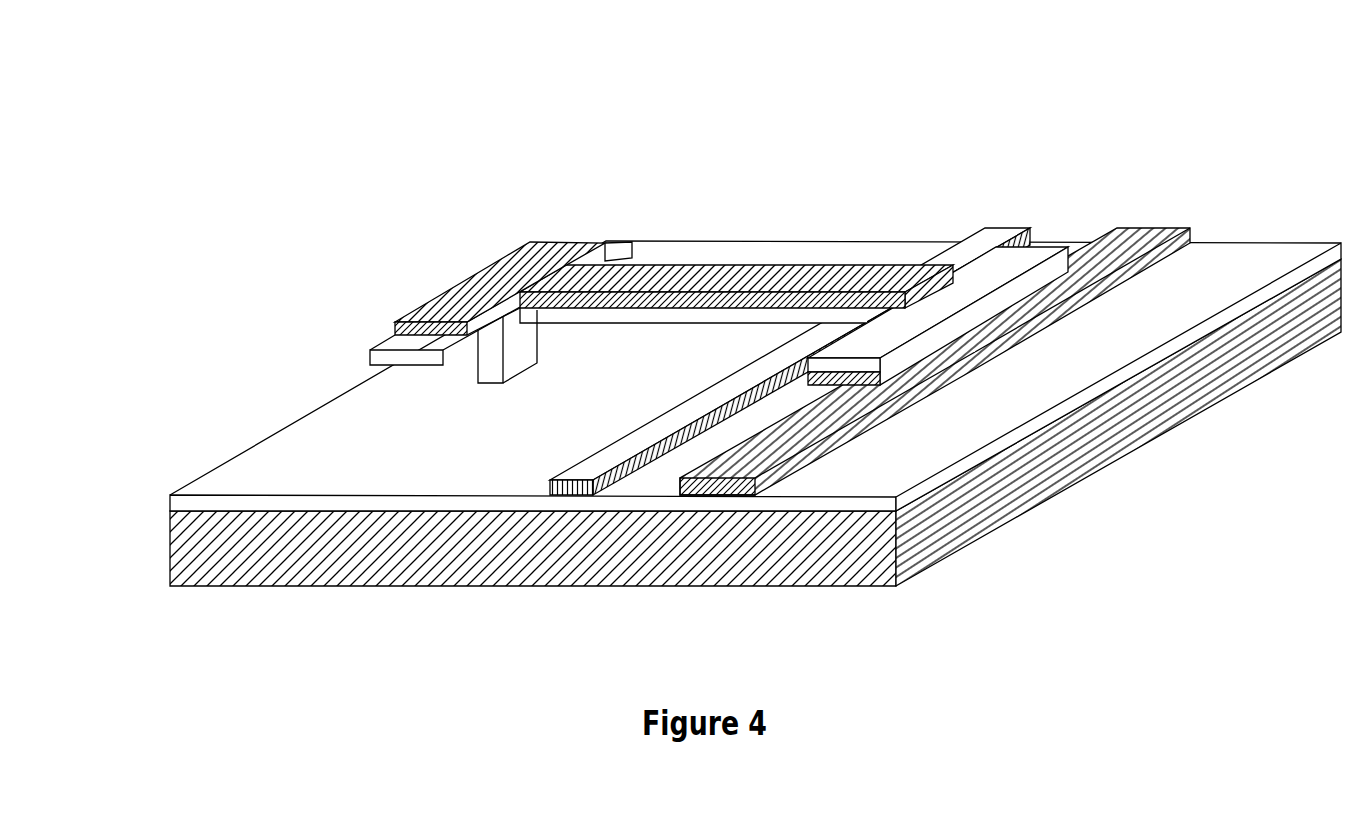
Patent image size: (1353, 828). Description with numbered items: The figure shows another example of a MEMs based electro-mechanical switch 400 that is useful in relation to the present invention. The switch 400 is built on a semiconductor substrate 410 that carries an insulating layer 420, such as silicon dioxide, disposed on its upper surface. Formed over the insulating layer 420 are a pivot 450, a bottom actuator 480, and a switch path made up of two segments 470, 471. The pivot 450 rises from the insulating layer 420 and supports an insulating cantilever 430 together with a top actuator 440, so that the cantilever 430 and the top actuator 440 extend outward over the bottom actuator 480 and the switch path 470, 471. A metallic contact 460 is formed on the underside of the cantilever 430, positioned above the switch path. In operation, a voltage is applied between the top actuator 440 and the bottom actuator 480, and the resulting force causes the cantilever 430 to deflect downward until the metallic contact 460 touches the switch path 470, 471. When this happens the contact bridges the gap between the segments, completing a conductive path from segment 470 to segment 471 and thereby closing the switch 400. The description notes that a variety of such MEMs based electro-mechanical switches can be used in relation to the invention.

The MEMs based electro-mechanical switch 400 is at (714, 331).
The semiconductor substrate 410 is at (714, 422).
The insulating layer 420 is at (755, 376).
The insulating cantilever 430 is at (720, 277).
The top actuator 440 is at (513, 288).
The pivot 450 is at (546, 354).
The metallic contact 460 is at (938, 317).
The switch path segment 470 is at (1073, 279).
The switch path segment 471 is at (827, 423).
The bottom actuator 480 is at (765, 361).